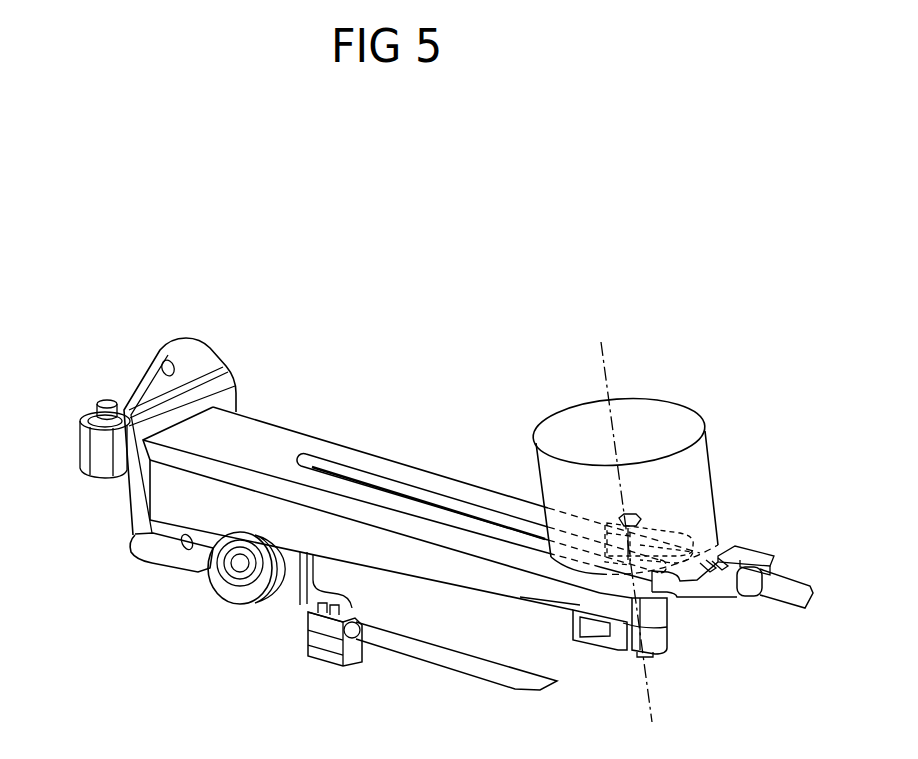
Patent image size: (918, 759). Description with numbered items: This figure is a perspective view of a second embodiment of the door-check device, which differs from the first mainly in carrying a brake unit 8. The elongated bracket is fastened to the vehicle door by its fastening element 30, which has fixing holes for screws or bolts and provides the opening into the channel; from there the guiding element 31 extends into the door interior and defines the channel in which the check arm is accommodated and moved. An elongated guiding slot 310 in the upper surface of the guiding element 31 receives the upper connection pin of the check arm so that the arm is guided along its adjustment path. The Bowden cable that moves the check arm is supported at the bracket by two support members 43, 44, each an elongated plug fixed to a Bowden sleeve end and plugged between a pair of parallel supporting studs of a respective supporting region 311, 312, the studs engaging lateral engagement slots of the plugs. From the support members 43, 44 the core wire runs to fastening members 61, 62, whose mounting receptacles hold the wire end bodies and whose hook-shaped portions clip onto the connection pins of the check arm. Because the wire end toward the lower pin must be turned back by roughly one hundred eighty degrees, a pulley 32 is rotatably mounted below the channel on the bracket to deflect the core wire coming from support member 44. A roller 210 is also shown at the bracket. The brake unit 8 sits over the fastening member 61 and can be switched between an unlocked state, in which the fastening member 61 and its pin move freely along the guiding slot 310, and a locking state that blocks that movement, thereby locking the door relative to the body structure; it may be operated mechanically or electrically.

The brake unit 8 is at (670, 382).
The fastening element 30 is at (172, 343).
The guiding element 31 is at (276, 422).
The pulley 32 is at (227, 588).
The support member 43 is at (742, 592).
The support member 44 is at (350, 660).
The fastening member 61 is at (688, 538).
The fastening member 62 is at (607, 643).
The roller 210 is at (82, 440).
The guiding slot 310 is at (378, 478).
The supporting region 311 is at (760, 550).
The supporting region 312 is at (330, 648).